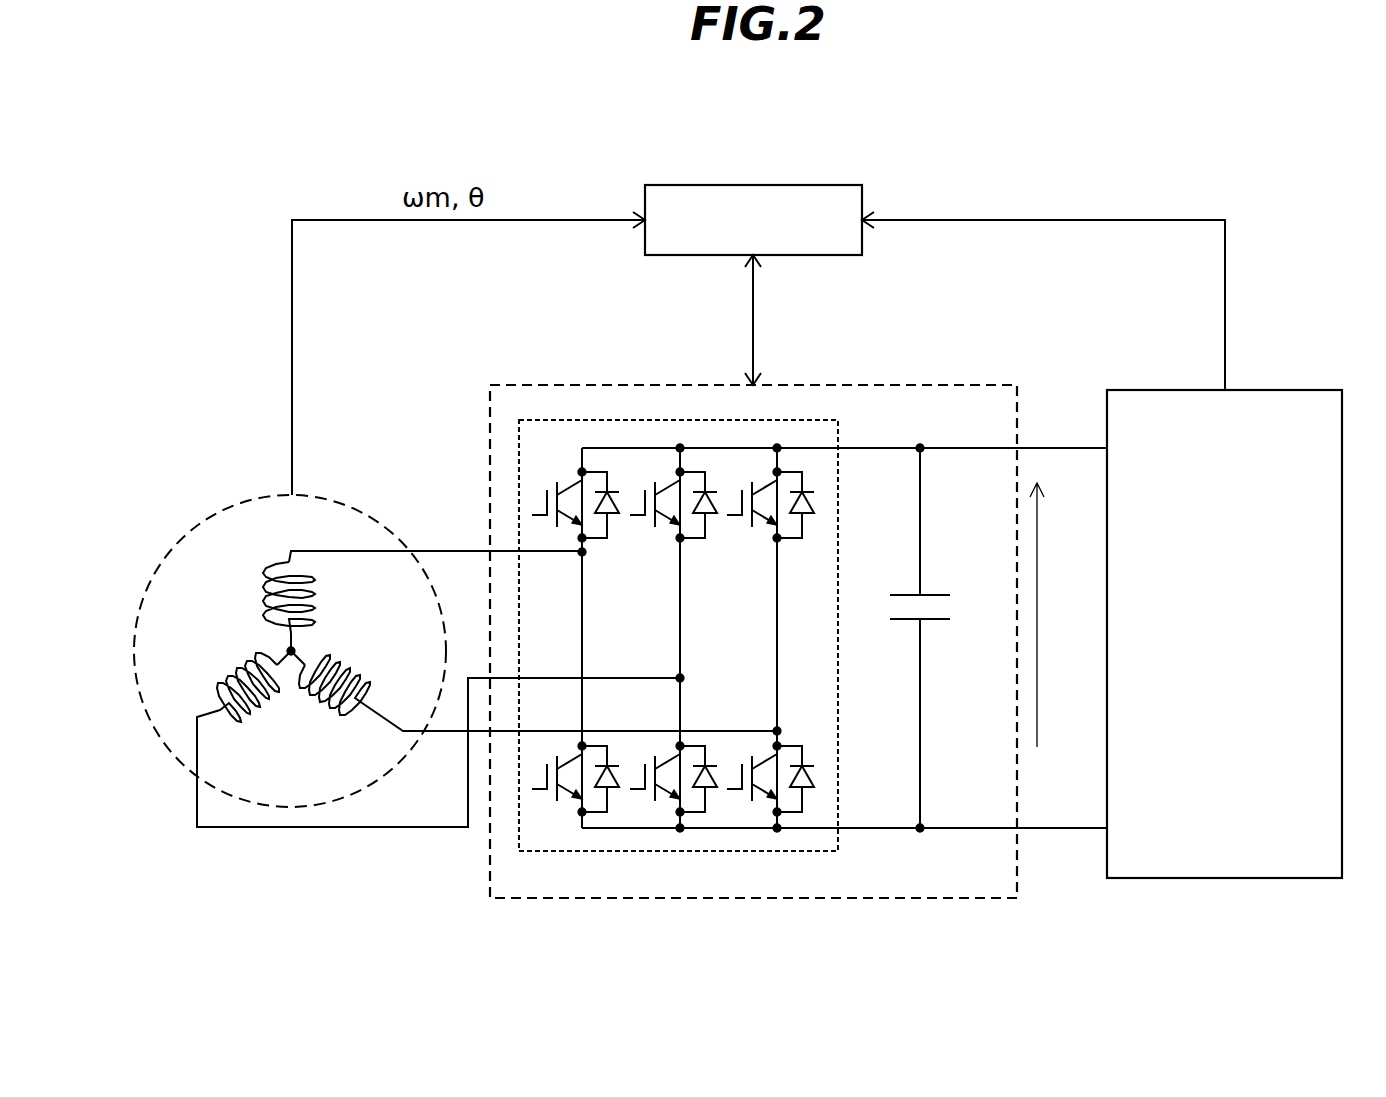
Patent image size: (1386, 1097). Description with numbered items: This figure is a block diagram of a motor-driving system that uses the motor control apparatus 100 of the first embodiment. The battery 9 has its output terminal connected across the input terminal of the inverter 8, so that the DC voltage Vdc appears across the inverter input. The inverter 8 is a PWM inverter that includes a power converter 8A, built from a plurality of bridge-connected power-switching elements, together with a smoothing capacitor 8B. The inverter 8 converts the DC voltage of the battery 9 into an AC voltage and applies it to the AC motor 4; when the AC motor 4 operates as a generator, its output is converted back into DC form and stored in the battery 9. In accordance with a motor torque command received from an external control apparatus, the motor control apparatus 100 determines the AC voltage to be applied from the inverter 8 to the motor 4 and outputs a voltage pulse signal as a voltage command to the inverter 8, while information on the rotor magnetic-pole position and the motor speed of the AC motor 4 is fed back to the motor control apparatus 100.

The motor control apparatus 100 is at (755, 185).
The AC motor 4 is at (352, 500).
The inverter 8 is at (940, 385).
The power converter 8A is at (838, 695).
The smoothing capacitor 8B is at (935, 621).
The battery 9 is at (1290, 390).